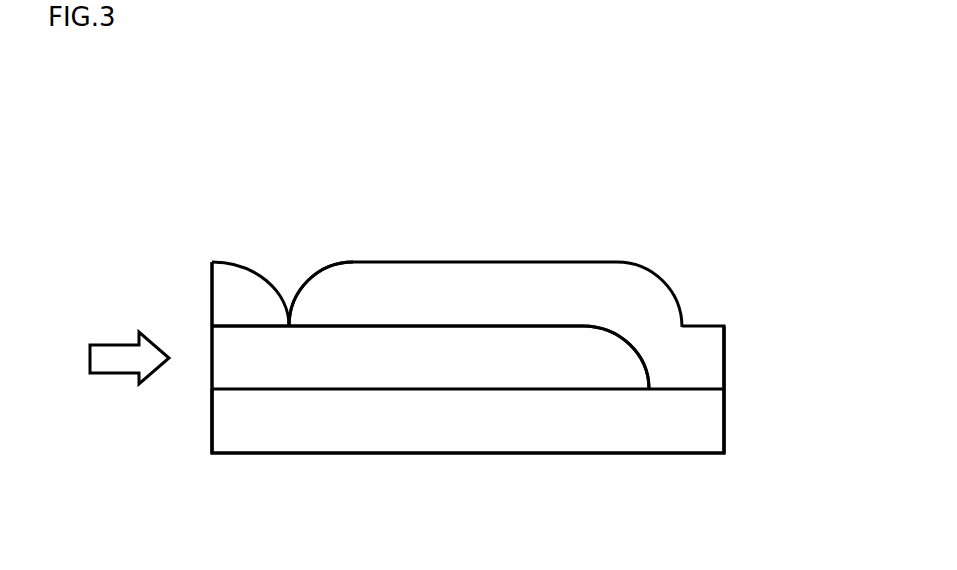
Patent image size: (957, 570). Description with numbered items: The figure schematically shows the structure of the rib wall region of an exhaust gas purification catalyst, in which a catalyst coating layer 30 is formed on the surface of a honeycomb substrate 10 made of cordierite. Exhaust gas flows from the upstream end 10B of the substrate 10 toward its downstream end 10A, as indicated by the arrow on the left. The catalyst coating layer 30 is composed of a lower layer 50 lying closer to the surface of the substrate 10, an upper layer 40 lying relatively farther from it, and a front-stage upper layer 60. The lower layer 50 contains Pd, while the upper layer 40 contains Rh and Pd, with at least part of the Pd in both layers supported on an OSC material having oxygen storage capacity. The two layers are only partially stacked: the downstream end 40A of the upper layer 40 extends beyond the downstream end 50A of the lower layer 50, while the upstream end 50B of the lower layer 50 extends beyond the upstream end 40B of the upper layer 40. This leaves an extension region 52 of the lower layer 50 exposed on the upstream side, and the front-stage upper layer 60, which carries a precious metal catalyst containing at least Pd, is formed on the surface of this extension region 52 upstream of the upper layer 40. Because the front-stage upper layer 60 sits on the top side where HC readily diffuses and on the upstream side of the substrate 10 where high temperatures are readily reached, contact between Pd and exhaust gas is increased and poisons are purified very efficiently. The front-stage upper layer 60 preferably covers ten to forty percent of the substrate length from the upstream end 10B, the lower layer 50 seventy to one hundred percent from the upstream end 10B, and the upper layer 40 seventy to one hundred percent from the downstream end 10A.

The substrate 10 is at (725, 418).
The downstream end of the substrate 10A is at (725, 443).
The upstream end of the substrate 10B is at (212, 436).
The catalyst coating layer 30 is at (597, 198).
The upper layer 40 is at (423, 260).
The downstream end of the upper layer 40A is at (725, 355).
The upstream end of the upper layer 40B is at (305, 282).
The lower layer 50 is at (387, 390).
The downstream end of the lower layer 50A is at (626, 340).
The upstream end of the lower layer 50B is at (212, 364).
The extension region of the lower layer 52 is at (247, 342).
The front-stage upper layer 60 is at (232, 262).